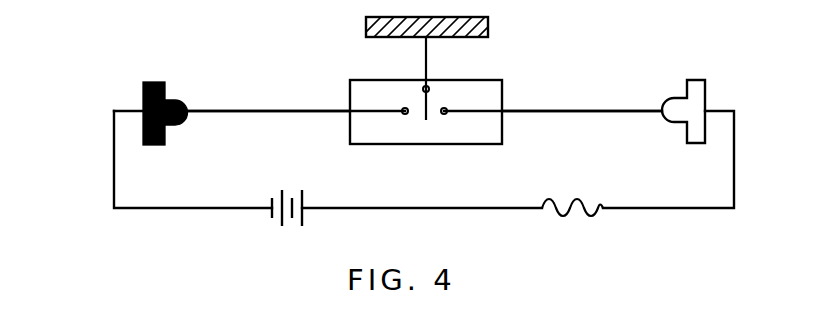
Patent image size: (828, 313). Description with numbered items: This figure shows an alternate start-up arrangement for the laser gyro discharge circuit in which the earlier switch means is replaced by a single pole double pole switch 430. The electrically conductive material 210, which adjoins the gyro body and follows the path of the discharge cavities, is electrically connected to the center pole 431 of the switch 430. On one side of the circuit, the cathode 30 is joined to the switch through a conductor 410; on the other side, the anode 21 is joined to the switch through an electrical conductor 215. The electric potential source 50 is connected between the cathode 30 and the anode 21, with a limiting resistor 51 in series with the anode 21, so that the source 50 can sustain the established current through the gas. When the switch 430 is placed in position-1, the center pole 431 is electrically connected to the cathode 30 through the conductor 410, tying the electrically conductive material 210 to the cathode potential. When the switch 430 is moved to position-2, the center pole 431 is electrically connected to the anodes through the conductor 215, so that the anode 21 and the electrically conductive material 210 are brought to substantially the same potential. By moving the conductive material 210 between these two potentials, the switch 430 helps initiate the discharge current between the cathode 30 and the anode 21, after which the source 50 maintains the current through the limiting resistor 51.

The cathode 30 is at (172, 100).
The conductor 410 is at (252, 110).
The single pole double pole switch 430 is at (447, 90).
The center pole 431 is at (423, 87).
The position- 1 is at (405, 100).
The position- 2 is at (449, 100).
The electrically conductive material 210 is at (488, 22).
The electrical conductor 215 is at (562, 110).
The anode 21 is at (705, 89).
The electric potential source 50 is at (270, 212).
The limiting resistor 51 is at (561, 214).